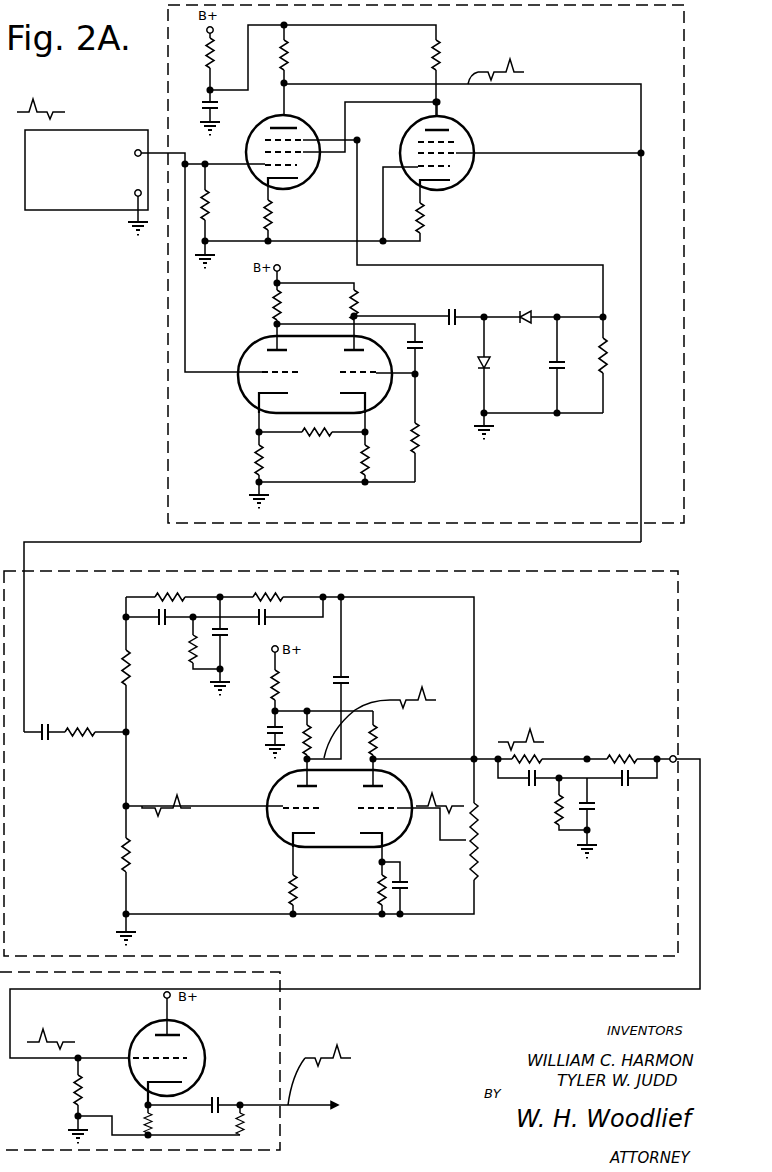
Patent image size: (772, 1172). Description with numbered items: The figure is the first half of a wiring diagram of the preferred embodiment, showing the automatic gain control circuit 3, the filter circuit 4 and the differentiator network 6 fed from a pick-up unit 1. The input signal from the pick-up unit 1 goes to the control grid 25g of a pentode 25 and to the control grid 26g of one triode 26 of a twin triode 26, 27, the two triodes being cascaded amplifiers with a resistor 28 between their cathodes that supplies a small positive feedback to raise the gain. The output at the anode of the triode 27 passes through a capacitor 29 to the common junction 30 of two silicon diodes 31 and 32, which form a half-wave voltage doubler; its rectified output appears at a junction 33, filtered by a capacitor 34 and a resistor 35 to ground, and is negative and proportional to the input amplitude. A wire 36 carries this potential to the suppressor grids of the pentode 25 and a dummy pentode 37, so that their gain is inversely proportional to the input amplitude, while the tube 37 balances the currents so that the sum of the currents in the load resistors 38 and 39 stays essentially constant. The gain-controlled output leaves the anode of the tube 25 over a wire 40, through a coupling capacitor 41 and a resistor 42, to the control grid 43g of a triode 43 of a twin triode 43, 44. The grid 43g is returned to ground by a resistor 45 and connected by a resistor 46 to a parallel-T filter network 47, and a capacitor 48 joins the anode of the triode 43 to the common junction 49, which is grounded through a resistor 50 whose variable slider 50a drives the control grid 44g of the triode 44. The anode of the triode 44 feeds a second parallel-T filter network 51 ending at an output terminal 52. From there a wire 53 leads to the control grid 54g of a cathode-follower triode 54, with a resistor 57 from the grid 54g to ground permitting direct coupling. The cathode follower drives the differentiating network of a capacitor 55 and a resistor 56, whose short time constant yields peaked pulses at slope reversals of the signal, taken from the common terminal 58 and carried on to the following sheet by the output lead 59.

The pick-up unit 1 is at (90, 130).
The automatic gain control circuit 3 is at (683, 343).
The filter circuit 4 is at (678, 622).
The differentiator network 6 is at (280, 1030).
The pentode 25 is at (309, 127).
The control grid of pentode 25 25g is at (270, 171).
The triode 26 is at (243, 333).
The control grid of triode 26 26g is at (270, 373).
The triode 27 is at (398, 348).
The resistor 28 is at (312, 437).
The capacitor 29 is at (452, 309).
The common junction 30 is at (485, 314).
The silicon diode 31 is at (523, 310).
The silicon diode 32 is at (490, 366).
The junction 33 is at (558, 314).
The capacitor 34 is at (566, 368).
The resistor 35 is at (606, 354).
The wire 36 is at (357, 207).
The pentode 37 is at (461, 140).
The load resistor 38 is at (289, 53).
The load resistor 39 is at (430, 56).
The wire 40 is at (641, 542).
The coupling capacitor 41 is at (45, 722).
The resistor 42 is at (86, 740).
The triode 43 is at (264, 783).
The control grid of triode 43 43g is at (290, 812).
The triode 44 is at (418, 786).
The control grid of triode 44 44g is at (390, 814).
The resistor 45 is at (118, 860).
The resistor 46 is at (122, 653).
The parallel-T filter network 47 is at (198, 683).
The capacitor 48 is at (350, 680).
The common junction 49 is at (344, 600).
The resistor 50 is at (479, 830).
The variable slider 50a is at (466, 846).
The second parallel-T filter network 51 is at (587, 742).
The output terminal 52 is at (673, 752).
The wire 53 is at (700, 869).
The triode 54 is at (146, 1026).
The control grid of triode 54 54g is at (184, 1060).
The capacitor 55 is at (213, 1114).
The resistor 56 is at (246, 1124).
The resistor 57 is at (72, 1090).
The common terminal 58 is at (241, 1103).
The output lead 59 is at (302, 1105).